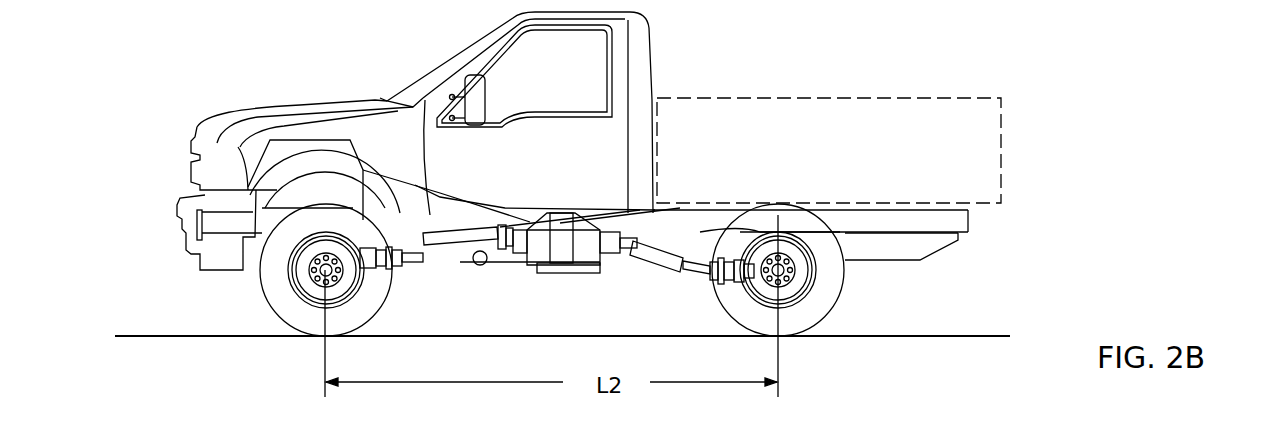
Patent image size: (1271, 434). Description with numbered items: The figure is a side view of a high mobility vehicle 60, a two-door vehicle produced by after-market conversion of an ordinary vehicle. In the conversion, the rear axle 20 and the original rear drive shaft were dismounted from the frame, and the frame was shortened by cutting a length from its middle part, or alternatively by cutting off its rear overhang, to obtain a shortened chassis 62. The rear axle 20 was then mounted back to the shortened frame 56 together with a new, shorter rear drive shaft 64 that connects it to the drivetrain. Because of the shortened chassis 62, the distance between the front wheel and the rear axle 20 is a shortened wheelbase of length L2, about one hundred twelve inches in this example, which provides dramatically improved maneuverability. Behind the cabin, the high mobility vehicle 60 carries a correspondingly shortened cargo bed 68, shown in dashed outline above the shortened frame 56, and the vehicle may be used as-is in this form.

The high mobility vehicle 60 is at (965, 82).
The shortened cargo bed 68 is at (1001, 142).
The rear drive shaft 64 is at (665, 215).
The rear axle 20 is at (779, 215).
The shortened frame 56 is at (950, 213).
The shortened chassis 62 is at (655, 285).